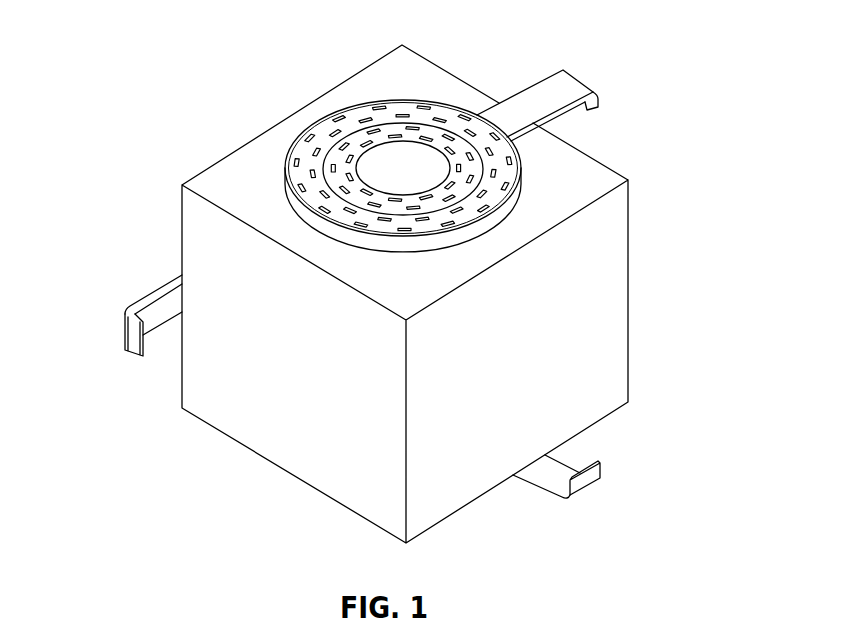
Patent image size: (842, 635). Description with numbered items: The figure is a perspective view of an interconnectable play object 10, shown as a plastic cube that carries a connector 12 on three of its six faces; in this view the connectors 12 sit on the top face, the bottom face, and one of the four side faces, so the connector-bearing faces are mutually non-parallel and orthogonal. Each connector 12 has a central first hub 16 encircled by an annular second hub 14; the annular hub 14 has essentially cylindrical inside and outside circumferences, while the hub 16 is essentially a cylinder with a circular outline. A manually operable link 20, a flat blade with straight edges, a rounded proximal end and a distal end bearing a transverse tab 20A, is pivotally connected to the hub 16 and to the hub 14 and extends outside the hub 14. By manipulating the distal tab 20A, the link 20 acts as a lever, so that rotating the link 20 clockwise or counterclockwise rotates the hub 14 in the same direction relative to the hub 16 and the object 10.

The play object 10 is at (641, 234).
The connector 12 is at (430, 148).
The annular second hub 14 is at (537, 192).
The central first hub 16 is at (322, 170).
The manually operable link 20 is at (538, 83).
The transverse tab 20A is at (600, 100).